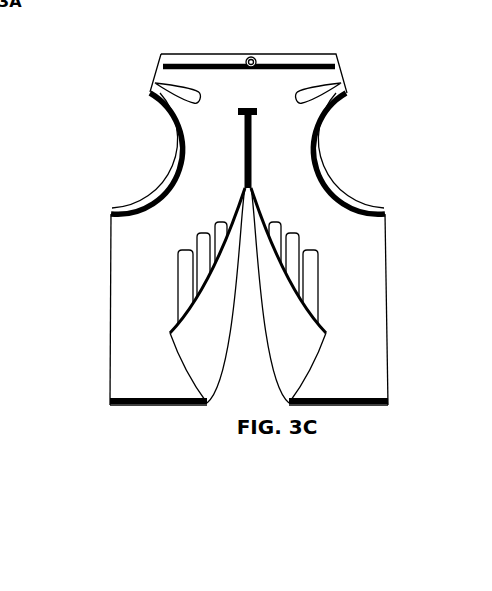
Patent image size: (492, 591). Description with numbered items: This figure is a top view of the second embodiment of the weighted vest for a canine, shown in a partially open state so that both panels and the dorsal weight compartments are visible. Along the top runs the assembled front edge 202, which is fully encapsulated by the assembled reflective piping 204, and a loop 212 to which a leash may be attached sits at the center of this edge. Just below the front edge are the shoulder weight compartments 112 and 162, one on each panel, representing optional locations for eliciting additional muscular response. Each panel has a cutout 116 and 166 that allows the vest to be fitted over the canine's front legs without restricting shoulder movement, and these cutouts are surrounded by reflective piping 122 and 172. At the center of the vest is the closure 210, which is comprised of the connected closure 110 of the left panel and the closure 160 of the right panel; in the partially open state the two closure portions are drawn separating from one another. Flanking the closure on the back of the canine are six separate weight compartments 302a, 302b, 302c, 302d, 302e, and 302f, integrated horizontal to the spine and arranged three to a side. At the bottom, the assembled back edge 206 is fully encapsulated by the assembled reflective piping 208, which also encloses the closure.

The assembled front edge 202 is at (274, 51).
The assembled reflective piping 204 is at (306, 62).
The loop 212 is at (252, 56).
The weight compartment 112 is at (177, 87).
The weight compartment 162 is at (326, 87).
The cutout 116 is at (173, 145).
The reflective piping 122 is at (163, 112).
The cutout 166 is at (323, 128).
The reflective piping 172 is at (344, 190).
The closure 210 is at (253, 143).
The closure 160 is at (262, 207).
The closure 110 is at (232, 212).
The weight compartment 302a is at (222, 237).
The weight compartment 302b is at (206, 268).
The weight compartment 302c is at (188, 295).
The weight compartment 302d is at (274, 227).
The weight compartment 302e is at (296, 240).
The weight compartment 302f is at (309, 282).
The assembled back edge 206 is at (110, 401).
The assembled reflective piping 208 is at (345, 392).